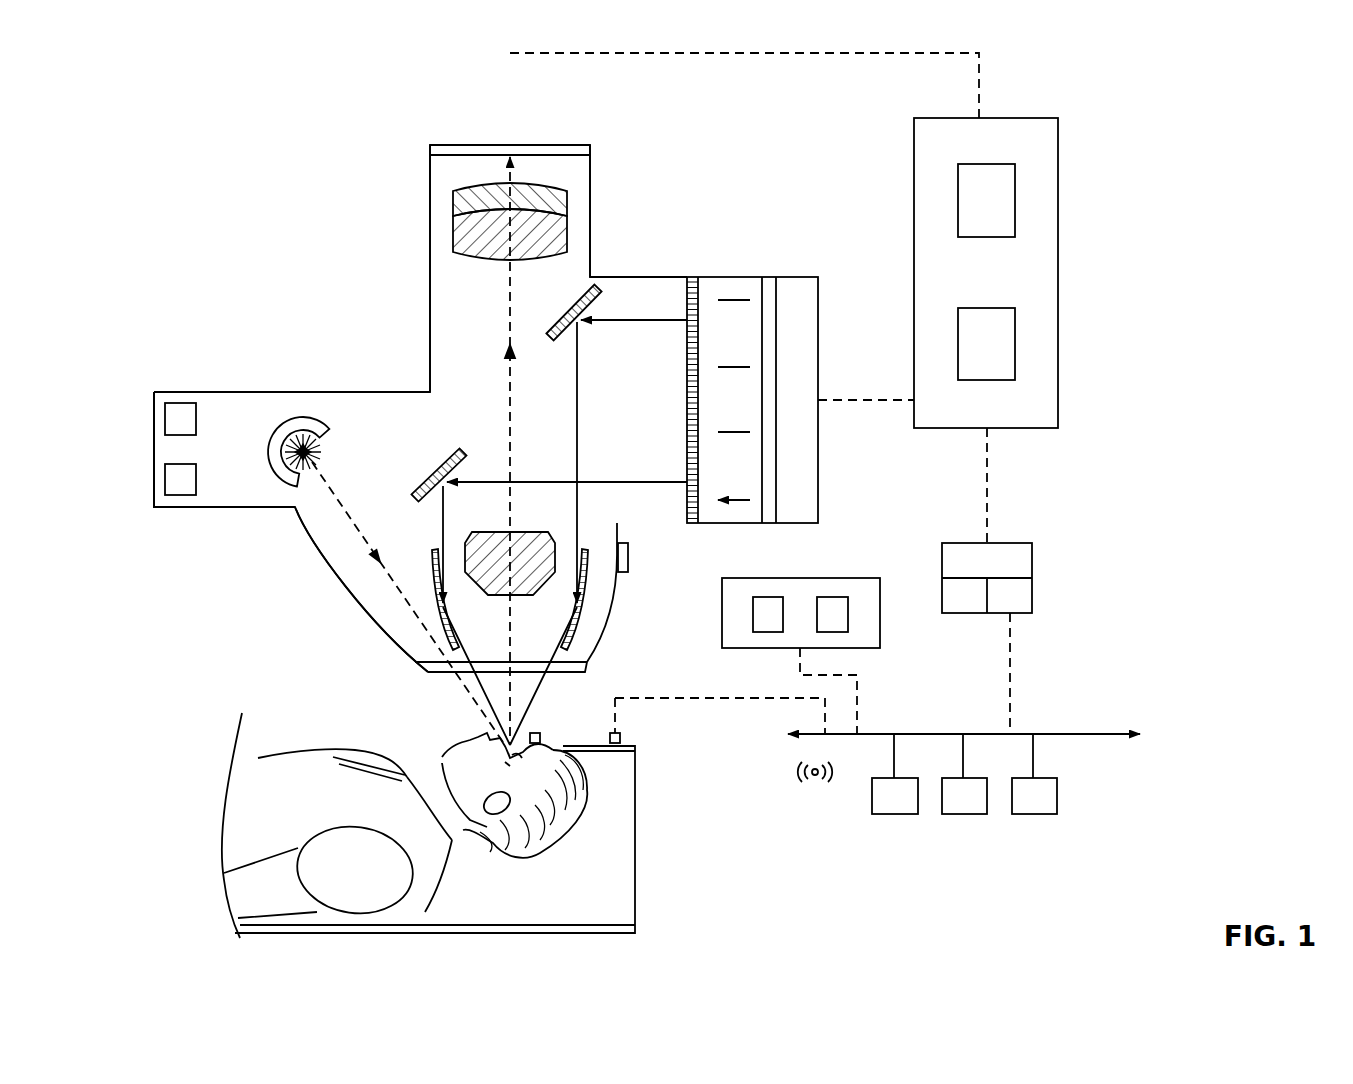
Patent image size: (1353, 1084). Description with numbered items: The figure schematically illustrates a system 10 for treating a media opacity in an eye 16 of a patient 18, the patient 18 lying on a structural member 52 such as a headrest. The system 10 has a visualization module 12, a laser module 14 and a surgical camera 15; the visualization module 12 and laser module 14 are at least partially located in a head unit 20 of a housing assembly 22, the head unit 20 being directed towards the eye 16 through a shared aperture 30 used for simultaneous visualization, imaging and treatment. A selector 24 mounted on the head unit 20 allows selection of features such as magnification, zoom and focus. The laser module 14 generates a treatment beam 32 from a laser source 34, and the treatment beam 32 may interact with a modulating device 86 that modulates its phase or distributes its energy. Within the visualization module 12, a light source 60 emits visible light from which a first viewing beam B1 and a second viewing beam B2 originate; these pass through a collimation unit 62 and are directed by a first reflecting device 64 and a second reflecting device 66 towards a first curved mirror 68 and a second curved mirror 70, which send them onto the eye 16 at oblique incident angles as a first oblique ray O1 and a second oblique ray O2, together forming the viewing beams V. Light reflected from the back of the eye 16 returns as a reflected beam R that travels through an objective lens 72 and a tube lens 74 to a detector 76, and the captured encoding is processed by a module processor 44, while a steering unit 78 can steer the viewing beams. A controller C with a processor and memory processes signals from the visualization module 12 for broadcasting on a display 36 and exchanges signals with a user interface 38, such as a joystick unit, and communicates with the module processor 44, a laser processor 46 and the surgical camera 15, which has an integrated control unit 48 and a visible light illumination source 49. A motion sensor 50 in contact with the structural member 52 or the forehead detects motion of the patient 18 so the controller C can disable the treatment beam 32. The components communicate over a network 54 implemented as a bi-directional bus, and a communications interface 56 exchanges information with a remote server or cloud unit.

The system 10 is at (252, 253).
The visualization module 12 is at (775, 122).
The laser module 14 is at (258, 365).
The surgical camera 15 is at (801, 614).
The eye 16 is at (495, 758).
The patient 18 is at (404, 812).
The head unit 20 is at (325, 620).
The housing assembly 22 is at (800, 360).
The selector 24 is at (630, 565).
The shared aperture 30 is at (600, 665).
The treatment beam 32 is at (325, 542).
The laser source 34 is at (330, 402).
The display 36 is at (895, 816).
The user interface 38 is at (965, 816).
The module processor 44 is at (1015, 200).
The laser processor 46 is at (165, 415).
The integrated control unit 48 is at (833, 597).
The visible light illumination source 49 is at (770, 597).
The motion sensor 50 is at (620, 735).
The structural member 52 is at (640, 840).
The network 54 is at (822, 792).
The communications interface 56 is at (1035, 816).
The light source 60 is at (768, 267).
The collimation unit 62 is at (692, 267).
The first reflecting device 64 is at (583, 298).
The second reflecting device 66 is at (437, 466).
The first curved mirror 68 is at (590, 585).
The second curved mirror 70 is at (440, 622).
The objective lens 72 is at (523, 530).
The tube lens 74 is at (445, 200).
The detector 76 is at (420, 135).
The steering unit 78 is at (1015, 345).
The modulating device 86 is at (165, 480).
The first viewing beam B1 is at (635, 296).
The second viewing beam B2 is at (620, 462).
The reflected beam R is at (503, 386).
The viewing beams V is at (475, 716).
The first oblique ray O1 is at (530, 712).
The second oblique ray O2 is at (467, 683).
The controller C is at (987, 579).